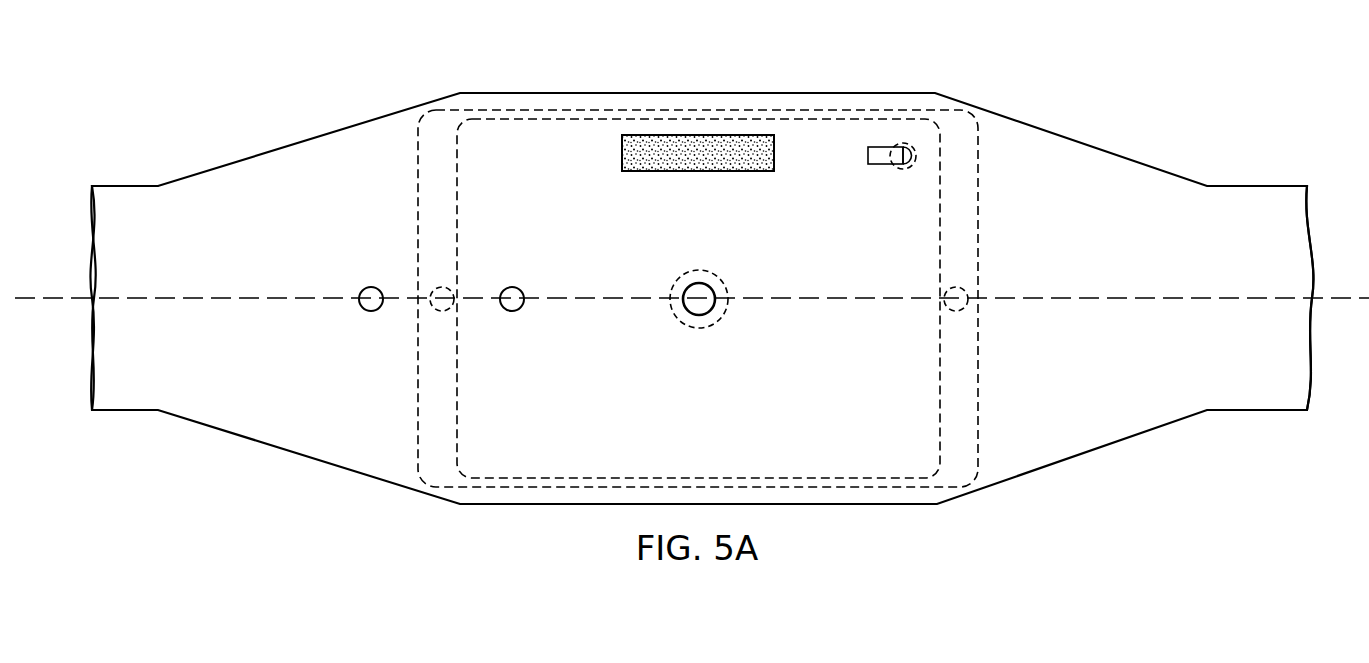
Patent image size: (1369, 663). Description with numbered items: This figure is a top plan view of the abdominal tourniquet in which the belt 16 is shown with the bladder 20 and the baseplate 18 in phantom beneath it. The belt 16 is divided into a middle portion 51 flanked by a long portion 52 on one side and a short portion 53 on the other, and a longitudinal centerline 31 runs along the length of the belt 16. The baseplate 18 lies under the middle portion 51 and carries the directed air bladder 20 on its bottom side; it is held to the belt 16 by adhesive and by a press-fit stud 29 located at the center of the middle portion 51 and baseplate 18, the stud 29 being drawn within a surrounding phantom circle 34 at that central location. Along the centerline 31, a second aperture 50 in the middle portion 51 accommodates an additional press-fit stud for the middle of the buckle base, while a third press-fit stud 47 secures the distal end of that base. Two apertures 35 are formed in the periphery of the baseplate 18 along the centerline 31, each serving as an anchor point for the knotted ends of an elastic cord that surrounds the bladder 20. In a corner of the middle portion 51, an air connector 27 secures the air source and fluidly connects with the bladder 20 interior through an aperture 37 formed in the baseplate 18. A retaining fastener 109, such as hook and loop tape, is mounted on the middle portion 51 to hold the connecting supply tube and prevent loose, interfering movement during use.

The semi-ridge belt 16 is at (428, 95).
The baseplate 18 is at (416, 373).
The directed air bladder 20 is at (518, 474).
The air connector 27 is at (875, 166).
The press-fit stud 29 is at (708, 312).
The longitudinal centerline 31 is at (163, 296).
The aperture boundary 34 is at (713, 274).
The apertures 35 is at (442, 311).
The aperture 37 is at (913, 170).
The third press-fit stud 47 is at (371, 287).
The second aperture 50 is at (512, 287).
The middle portion 51 is at (684, 418).
The long portion 52 is at (212, 313).
The short portion 53 is at (1130, 313).
The retaining fastener 109 is at (698, 173).